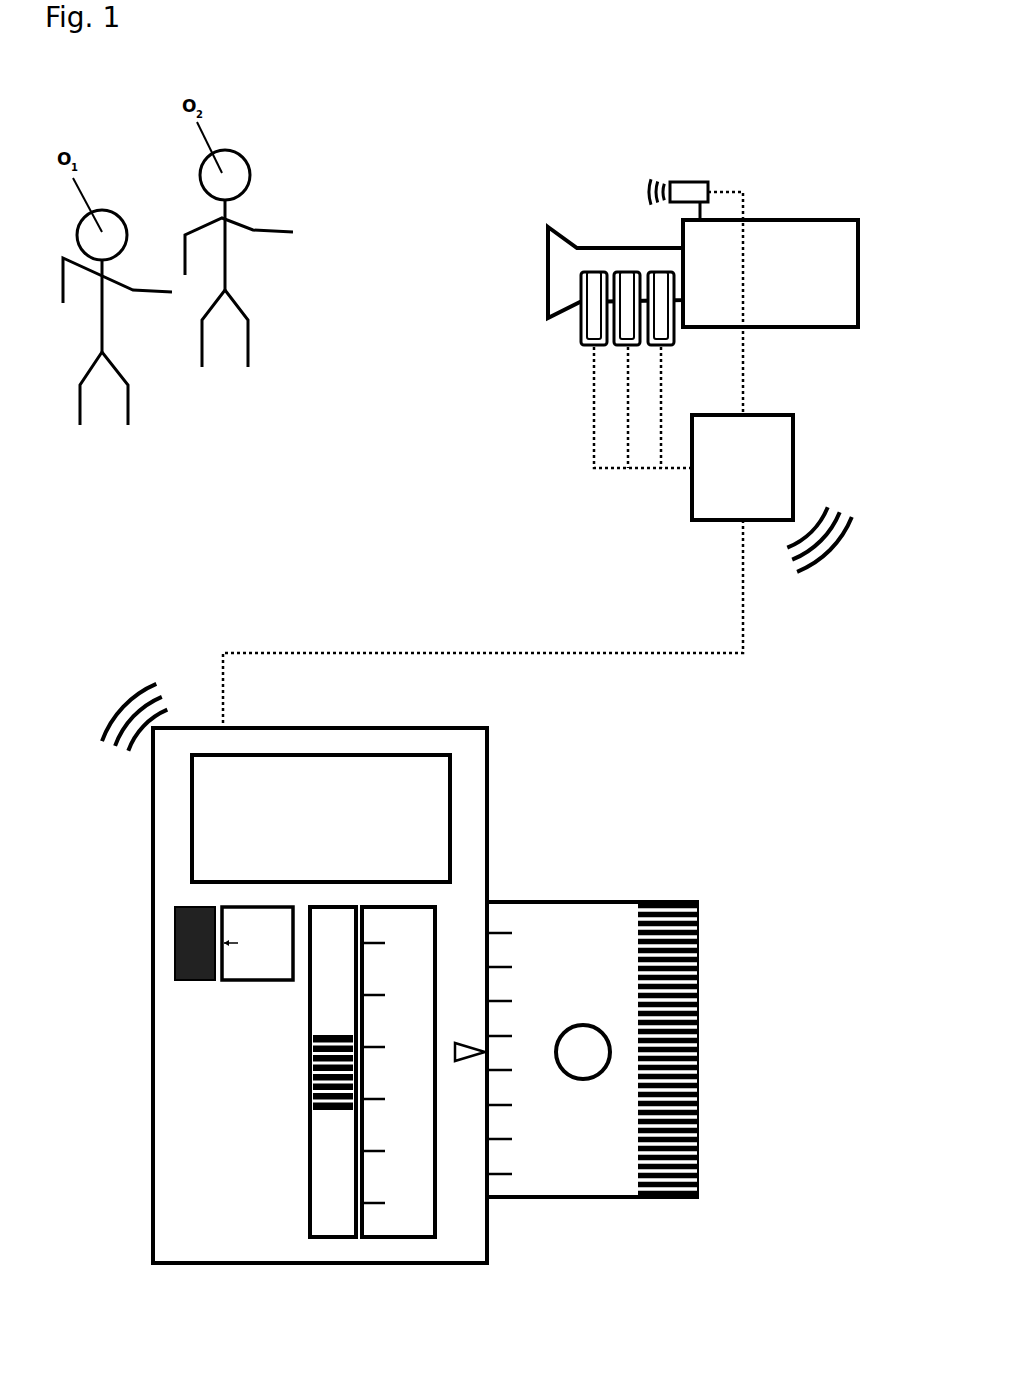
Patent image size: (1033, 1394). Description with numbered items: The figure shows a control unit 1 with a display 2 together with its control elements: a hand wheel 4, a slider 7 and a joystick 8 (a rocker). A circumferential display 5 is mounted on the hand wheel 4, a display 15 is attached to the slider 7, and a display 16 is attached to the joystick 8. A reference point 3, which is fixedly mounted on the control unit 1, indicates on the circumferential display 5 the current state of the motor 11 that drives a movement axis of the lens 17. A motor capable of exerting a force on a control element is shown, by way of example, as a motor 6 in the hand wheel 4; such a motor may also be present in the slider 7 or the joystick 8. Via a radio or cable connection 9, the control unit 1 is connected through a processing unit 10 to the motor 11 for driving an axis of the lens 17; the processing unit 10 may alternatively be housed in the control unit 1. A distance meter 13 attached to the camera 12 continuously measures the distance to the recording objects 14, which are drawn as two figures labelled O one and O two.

The control unit 1 is at (555, 775).
The display 2 is at (327, 768).
The reference point 3 is at (463, 1048).
The hand wheel 4 is at (656, 899).
The circumferential display 5 is at (568, 1168).
The motor 6 is at (610, 1045).
The slider 7 is at (312, 1112).
The joystick 8 is at (175, 955).
The radio or cable connection 9 is at (145, 716).
The processing unit 10 is at (705, 497).
The motor 11 is at (592, 320).
The camera 12 is at (815, 262).
The distance meter 13 is at (694, 187).
The recording objects 14 is at (188, 442).
The display 15 is at (390, 1218).
The display 16 is at (237, 970).
The lens 17 is at (563, 273).